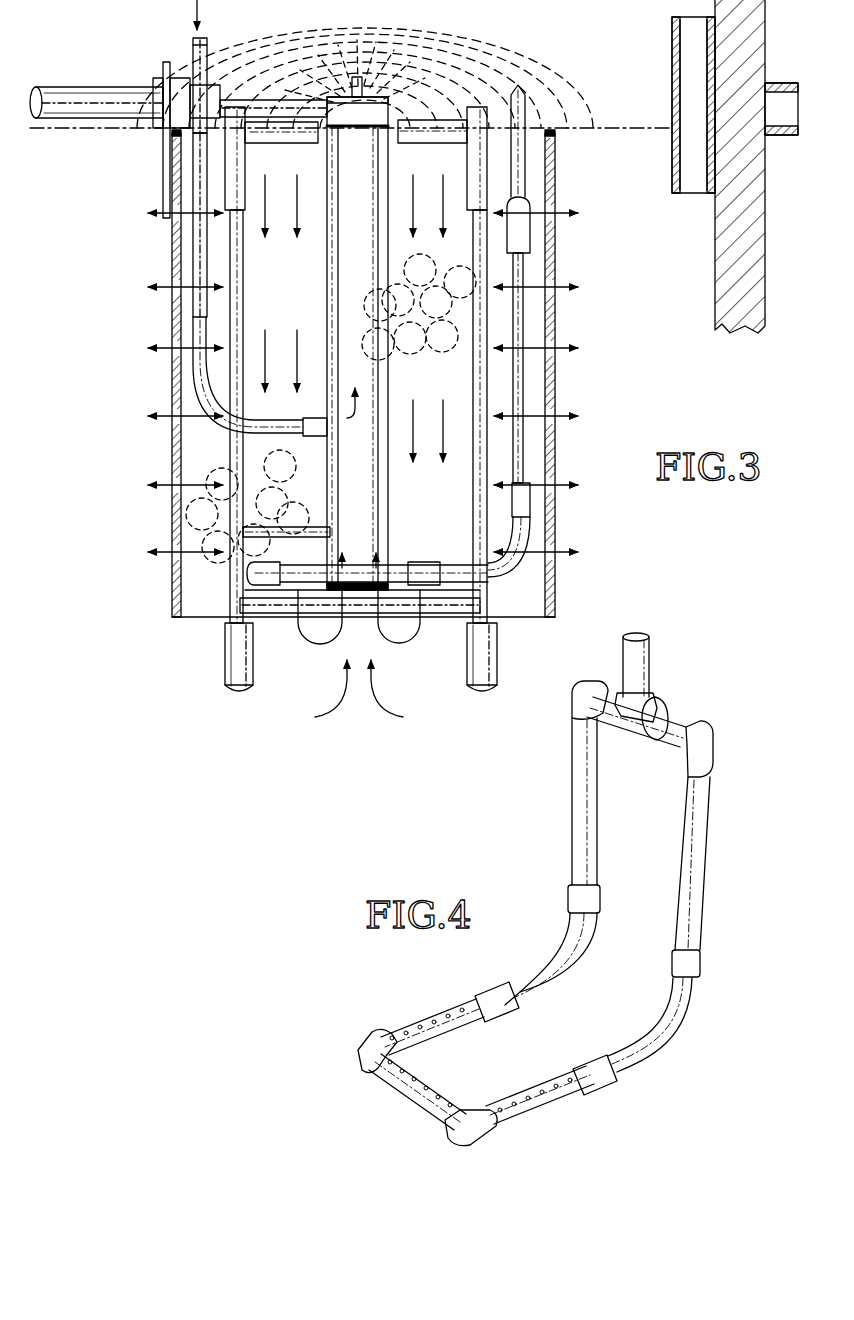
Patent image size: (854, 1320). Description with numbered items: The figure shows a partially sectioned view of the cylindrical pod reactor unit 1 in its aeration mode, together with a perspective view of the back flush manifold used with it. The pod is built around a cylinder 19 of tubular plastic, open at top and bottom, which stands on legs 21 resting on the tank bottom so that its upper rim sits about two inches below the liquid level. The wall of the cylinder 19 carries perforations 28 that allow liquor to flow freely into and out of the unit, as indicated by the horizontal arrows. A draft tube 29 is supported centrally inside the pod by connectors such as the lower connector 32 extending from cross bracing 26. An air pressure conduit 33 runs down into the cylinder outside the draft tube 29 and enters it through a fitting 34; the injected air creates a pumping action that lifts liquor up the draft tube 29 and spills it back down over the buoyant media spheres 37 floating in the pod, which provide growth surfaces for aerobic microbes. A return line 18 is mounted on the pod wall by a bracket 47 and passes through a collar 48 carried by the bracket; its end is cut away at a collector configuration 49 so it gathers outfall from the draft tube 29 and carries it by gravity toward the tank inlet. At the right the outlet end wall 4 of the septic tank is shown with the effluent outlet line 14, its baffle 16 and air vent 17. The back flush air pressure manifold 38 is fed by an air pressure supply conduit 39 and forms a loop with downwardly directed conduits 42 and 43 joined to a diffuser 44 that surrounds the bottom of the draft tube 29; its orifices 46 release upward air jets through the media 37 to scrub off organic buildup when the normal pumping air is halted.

In FIG. 3, the cylindrical pod reactor unit 1 is at (130, 322).
In FIG. 3, the outlet end wall 4 is at (724, 222).
In FIG. 3, the effluent outlet line 14 is at (780, 85).
In FIG. 3, the baffle 16 is at (690, 167).
In FIG. 3, the air vent 17 is at (688, 40).
In FIG. 3, the return line 18 is at (100, 86).
In FIG. 3, the cylinder 19 is at (557, 448).
In FIG. 3, the legs 21 is at (240, 313).
In FIG. 3, the cross bracing 26 is at (362, 133).
In FIG. 3, the perforations 28 is at (546, 293).
In FIG. 3, the draft tube 29 is at (338, 245).
In FIG. 3, the lower connector 32 is at (315, 523).
In FIG. 3, the air pressure conduit 33 is at (200, 163).
In FIG. 3, the fitting 34 is at (330, 440).
In FIG. 3, the buoyant media spheres 37 is at (248, 460).
In FIG. 4, the back flush air pressure manifold 38 is at (718, 1000).
In FIG. 3, the air pressure supply conduit 39 is at (523, 168).
In FIG. 4, the air pressure supply conduit 39 is at (652, 665).
In FIG. 3, the downwardly directed conduit 42 is at (525, 386).
In FIG. 4, the downwardly directed conduit 42 is at (707, 853).
In FIG. 4, the downwardly directed conduit 43 is at (598, 790).
In FIG. 4, the diffuser 44 is at (383, 1082).
In FIG. 4, the orifices 46 is at (471, 1016).
In FIG. 3, the bracket 47 is at (160, 138).
In FIG. 3, the collar 48 is at (158, 82).
In FIG. 3, the collector configuration 49 is at (340, 45).